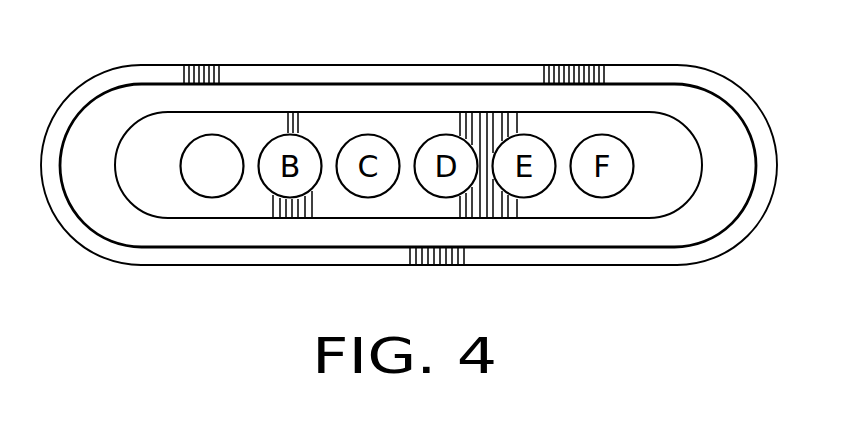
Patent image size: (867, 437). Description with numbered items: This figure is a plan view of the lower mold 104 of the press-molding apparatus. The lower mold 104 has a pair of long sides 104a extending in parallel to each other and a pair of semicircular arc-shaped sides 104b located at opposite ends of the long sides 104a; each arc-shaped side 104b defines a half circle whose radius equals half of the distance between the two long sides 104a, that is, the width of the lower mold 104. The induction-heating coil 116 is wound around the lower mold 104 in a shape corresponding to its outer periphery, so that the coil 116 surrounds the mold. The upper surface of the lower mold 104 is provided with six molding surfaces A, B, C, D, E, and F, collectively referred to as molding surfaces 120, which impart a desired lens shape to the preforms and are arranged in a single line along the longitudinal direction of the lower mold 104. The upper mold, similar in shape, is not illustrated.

The lower mold 104 is at (628, 108).
The long sides 104a is at (350, 112).
The semicircular arc-shaped sides 104b is at (703, 163).
The induction-heating coil 116 is at (541, 72).
The molding surfaces 120 is at (205, 197).